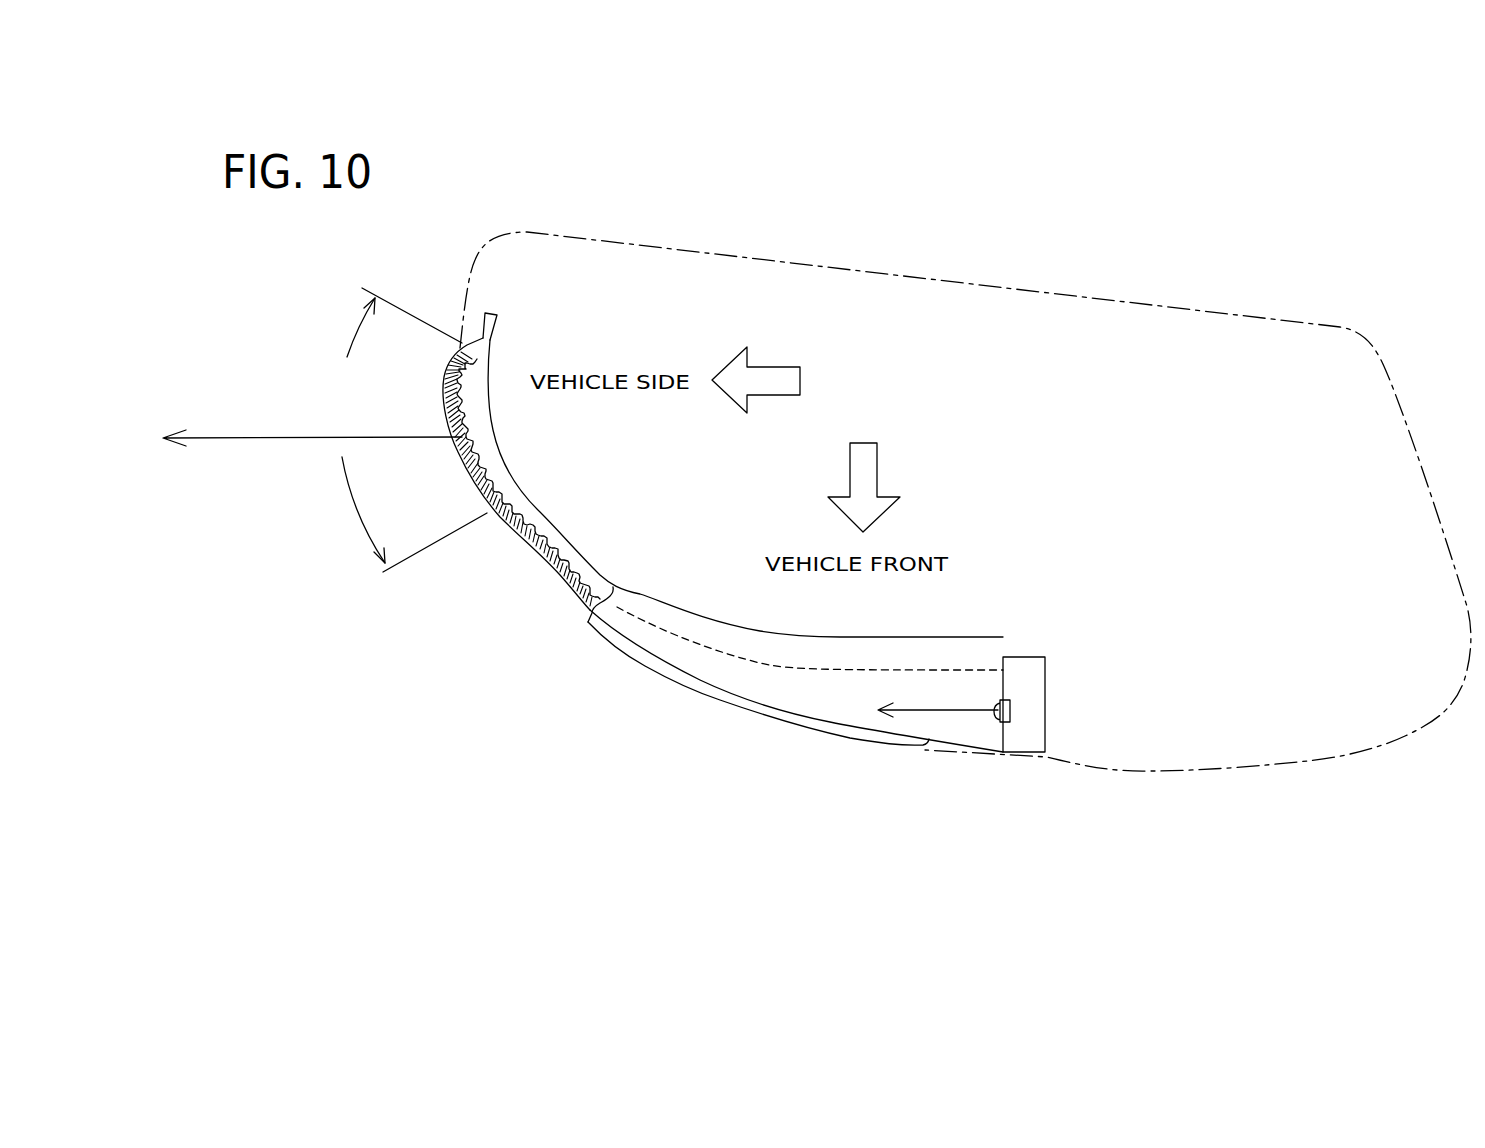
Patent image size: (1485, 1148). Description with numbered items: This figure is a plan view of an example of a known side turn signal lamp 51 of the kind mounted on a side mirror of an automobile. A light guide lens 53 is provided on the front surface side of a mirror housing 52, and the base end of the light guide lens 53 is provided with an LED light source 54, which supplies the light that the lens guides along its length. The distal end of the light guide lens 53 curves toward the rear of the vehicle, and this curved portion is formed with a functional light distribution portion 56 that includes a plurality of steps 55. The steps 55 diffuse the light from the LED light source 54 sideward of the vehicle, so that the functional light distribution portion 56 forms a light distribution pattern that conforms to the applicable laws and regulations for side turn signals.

The side turn signal lamp 51 is at (697, 735).
The mirror housing 52 is at (1228, 766).
The light guide lens 53 is at (540, 588).
The LED light source 54 is at (1012, 705).
The steps 55 is at (462, 425).
The functional light distribution portion 56 is at (301, 430).